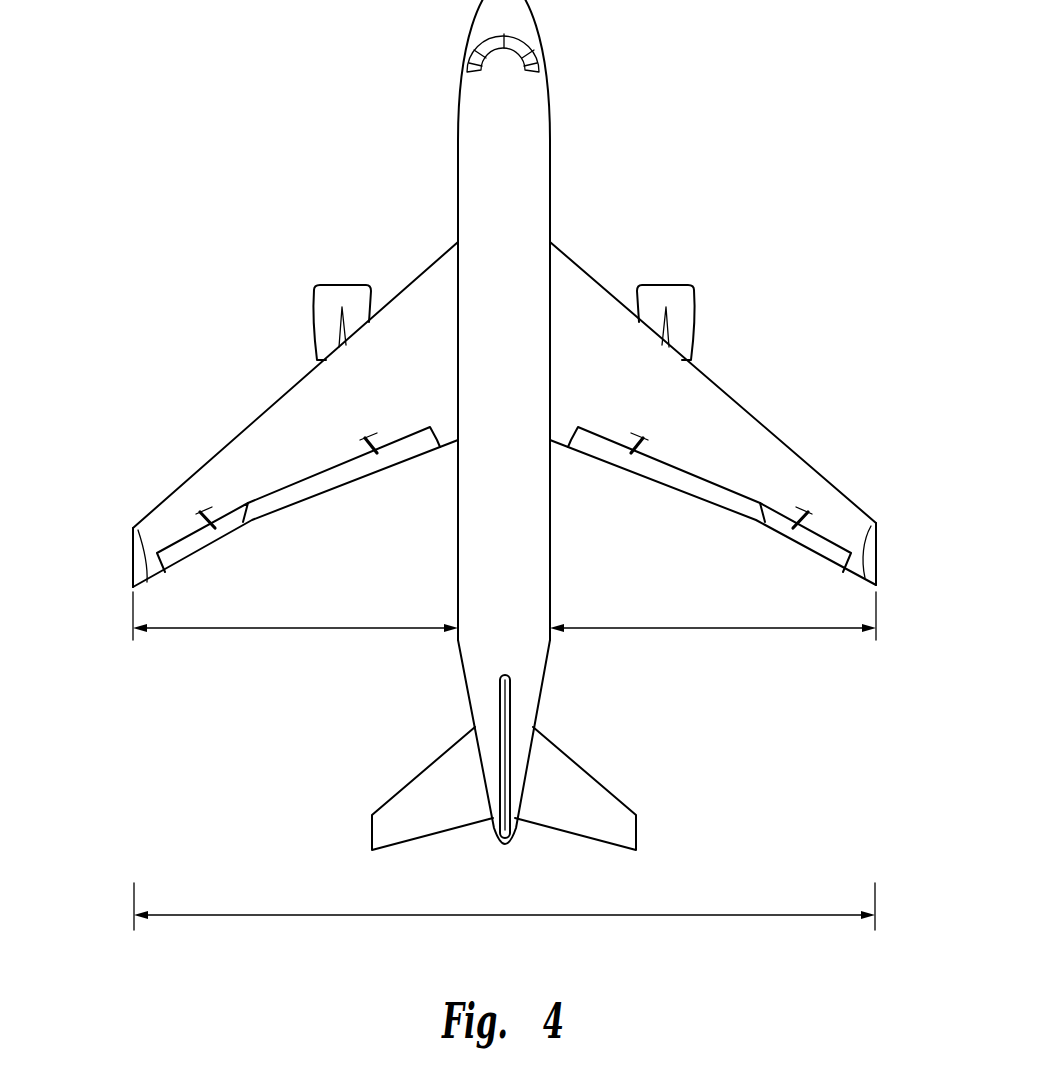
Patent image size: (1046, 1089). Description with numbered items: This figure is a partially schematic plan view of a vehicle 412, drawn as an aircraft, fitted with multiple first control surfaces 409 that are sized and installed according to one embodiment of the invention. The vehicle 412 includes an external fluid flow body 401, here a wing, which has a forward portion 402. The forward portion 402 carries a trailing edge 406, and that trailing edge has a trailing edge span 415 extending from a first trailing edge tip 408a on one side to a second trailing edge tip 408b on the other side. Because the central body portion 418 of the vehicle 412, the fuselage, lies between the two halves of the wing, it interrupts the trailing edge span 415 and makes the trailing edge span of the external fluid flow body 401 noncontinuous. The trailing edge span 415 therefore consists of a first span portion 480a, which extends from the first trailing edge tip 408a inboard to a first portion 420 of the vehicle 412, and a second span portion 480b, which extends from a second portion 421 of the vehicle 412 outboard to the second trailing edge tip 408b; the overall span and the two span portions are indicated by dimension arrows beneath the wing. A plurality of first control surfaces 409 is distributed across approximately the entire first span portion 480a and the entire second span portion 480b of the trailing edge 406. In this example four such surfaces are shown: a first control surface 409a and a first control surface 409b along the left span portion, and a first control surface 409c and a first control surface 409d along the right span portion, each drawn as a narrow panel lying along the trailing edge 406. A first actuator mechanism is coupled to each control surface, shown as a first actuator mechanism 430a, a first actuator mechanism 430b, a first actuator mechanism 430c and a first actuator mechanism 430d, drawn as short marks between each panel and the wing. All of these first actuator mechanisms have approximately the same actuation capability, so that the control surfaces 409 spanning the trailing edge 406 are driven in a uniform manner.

The vehicle 412 is at (505, 425).
The body portion 418 is at (533, 142).
The external fluid flow body 401 is at (505, 457).
The forward portion 402 is at (285, 428).
The trailing edge 406 is at (137, 527).
The first trailing edge tip 408a is at (133, 587).
The second trailing edge tip 408b is at (877, 587).
The first control surfaces 409 is at (504, 521).
The first control surface 409a is at (240, 535).
The first control surface 409b is at (398, 458).
The first control surface 409c is at (612, 458).
The first control surface 409d is at (795, 545).
The first actuator mechanism 430a is at (203, 512).
The first actuator mechanism 430b is at (368, 438).
The first actuator mechanism 430c is at (640, 438).
The first actuator mechanism 430d is at (808, 512).
The first portion 420 is at (463, 665).
The second portion 421 is at (545, 680).
The first span portion 480a is at (310, 630).
The second span portion 480b is at (700, 630).
The trailing edge span 415 is at (620, 915).